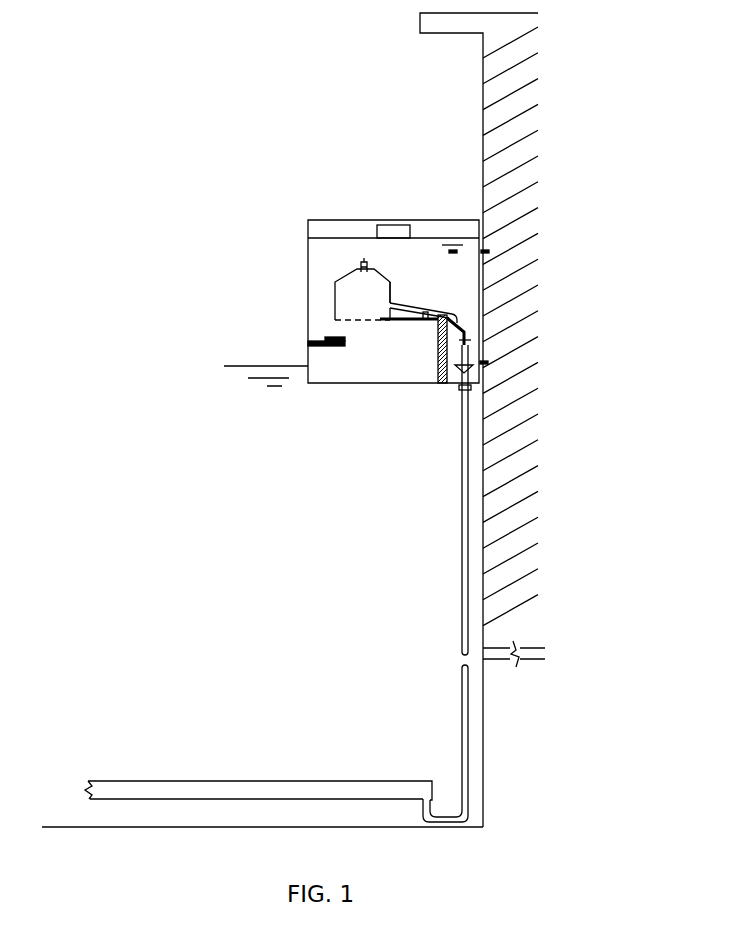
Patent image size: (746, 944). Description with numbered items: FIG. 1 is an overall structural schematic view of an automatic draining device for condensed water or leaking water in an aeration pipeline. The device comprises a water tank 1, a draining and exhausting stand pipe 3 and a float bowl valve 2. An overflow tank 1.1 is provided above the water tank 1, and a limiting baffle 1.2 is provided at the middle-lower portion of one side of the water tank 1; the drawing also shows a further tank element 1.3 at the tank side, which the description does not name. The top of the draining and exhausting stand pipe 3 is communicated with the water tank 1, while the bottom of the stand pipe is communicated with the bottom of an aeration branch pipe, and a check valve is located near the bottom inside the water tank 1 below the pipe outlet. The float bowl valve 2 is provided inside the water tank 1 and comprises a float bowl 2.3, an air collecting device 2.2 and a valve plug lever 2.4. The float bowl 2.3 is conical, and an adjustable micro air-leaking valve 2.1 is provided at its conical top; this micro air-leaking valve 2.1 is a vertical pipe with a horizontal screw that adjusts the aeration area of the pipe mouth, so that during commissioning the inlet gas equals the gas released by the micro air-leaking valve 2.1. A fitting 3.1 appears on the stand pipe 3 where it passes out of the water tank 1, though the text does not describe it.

The water tank 1 is at (308, 230).
The overflow tank 1.1 is at (410, 230).
The limiting baffle 1.2 is at (308, 342).
The partition wall 1.3 is at (447, 378).
The float bowl valve 2 is at (335, 283).
The adjustable micro air-leaking valve 2.1 is at (368, 267).
The air collecting device 2.2 is at (449, 318).
The float bowl 2.3 is at (391, 293).
The valve plug lever 2.4 is at (466, 336).
The draining and exhausting stand pipe 3 is at (462, 522).
The pipe fitting 3.1 is at (466, 387).